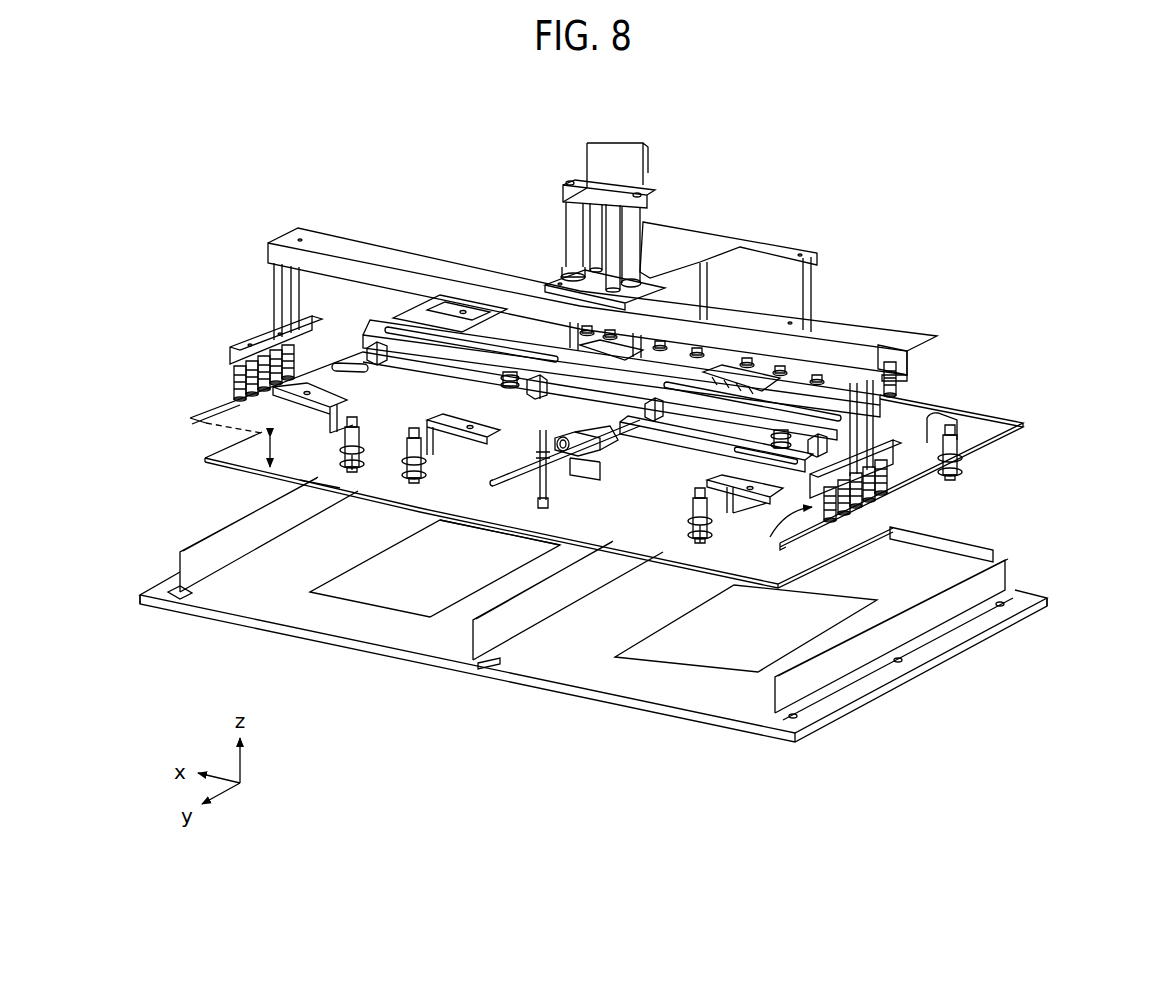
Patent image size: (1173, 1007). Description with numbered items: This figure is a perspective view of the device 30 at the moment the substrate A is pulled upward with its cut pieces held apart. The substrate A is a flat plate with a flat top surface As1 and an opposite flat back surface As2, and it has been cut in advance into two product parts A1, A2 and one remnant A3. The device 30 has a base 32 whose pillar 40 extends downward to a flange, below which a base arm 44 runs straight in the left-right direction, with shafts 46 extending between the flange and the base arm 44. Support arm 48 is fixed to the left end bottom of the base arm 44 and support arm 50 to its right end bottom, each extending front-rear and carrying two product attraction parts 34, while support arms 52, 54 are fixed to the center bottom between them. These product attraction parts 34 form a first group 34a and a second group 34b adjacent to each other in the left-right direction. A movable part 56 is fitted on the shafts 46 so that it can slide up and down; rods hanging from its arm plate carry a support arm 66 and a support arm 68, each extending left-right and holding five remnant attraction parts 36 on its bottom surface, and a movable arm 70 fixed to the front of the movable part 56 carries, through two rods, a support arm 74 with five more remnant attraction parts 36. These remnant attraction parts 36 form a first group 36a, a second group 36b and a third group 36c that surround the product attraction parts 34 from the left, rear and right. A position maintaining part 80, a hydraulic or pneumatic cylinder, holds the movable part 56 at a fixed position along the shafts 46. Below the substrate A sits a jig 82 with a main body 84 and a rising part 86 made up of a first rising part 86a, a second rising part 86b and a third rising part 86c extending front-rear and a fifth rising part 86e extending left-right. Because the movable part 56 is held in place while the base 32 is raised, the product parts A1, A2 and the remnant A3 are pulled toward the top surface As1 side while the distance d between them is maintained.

The device 30 is at (906, 164).
The base 32 is at (678, 161).
The product attraction parts 34 is at (500, 378).
The first group of the product attraction parts 34a is at (336, 470).
The second group of the product attraction parts 34b is at (686, 548).
The remnant attraction parts 36 is at (307, 333).
The first group of the remnant attraction parts 36a is at (220, 371).
The second group of the remnant attraction parts 36b is at (915, 371).
The third group of the remnant attraction parts 36c is at (777, 520).
The pillar 40 is at (610, 160).
The base arm 44 is at (378, 332).
The shafts 46 is at (642, 246).
The support arm 48 is at (350, 365).
The support arm 50 is at (773, 473).
The support arm 52 is at (510, 432).
The support arm 54 is at (637, 447).
The movable part 56 is at (729, 227).
The support arm 66 is at (560, 270).
The support arm 68 is at (870, 347).
The movable arm 70 is at (355, 241).
The support arm 74 is at (262, 335).
The position maintaining part 80 is at (572, 212).
The jig 82 is at (860, 746).
The main body 84 is at (703, 693).
The rising part 86 is at (161, 552).
The first rising part 86a is at (197, 550).
The second rising part 86b is at (503, 633).
The third rising part 86c is at (900, 625).
The fifth rising part 86e is at (950, 531).
The substrate A is at (1008, 382).
The product part A1 is at (317, 465).
The product part A2 is at (720, 553).
The remnant A3 is at (1010, 418).
The top surface As1 is at (447, 500).
The back surface As2 is at (457, 520).
The distance d is at (282, 454).